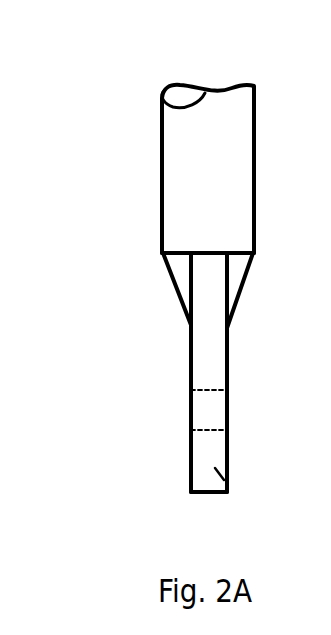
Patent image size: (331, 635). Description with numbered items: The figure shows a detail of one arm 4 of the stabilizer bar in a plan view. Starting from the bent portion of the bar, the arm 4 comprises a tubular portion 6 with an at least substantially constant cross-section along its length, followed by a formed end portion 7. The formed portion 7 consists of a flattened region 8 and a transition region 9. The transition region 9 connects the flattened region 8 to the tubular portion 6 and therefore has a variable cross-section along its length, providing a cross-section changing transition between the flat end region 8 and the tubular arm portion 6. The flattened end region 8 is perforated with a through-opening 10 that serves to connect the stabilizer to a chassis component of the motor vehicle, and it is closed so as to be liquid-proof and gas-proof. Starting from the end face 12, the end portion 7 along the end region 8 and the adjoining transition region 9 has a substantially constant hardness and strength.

The arm 4 is at (116, 128).
The tubular portion 6 is at (243, 174).
The formed portion 7 is at (113, 504).
The flattened region 8 is at (229, 366).
The transition region 9 is at (240, 287).
The through-opening 10 is at (214, 430).
The end face 12 is at (208, 493).